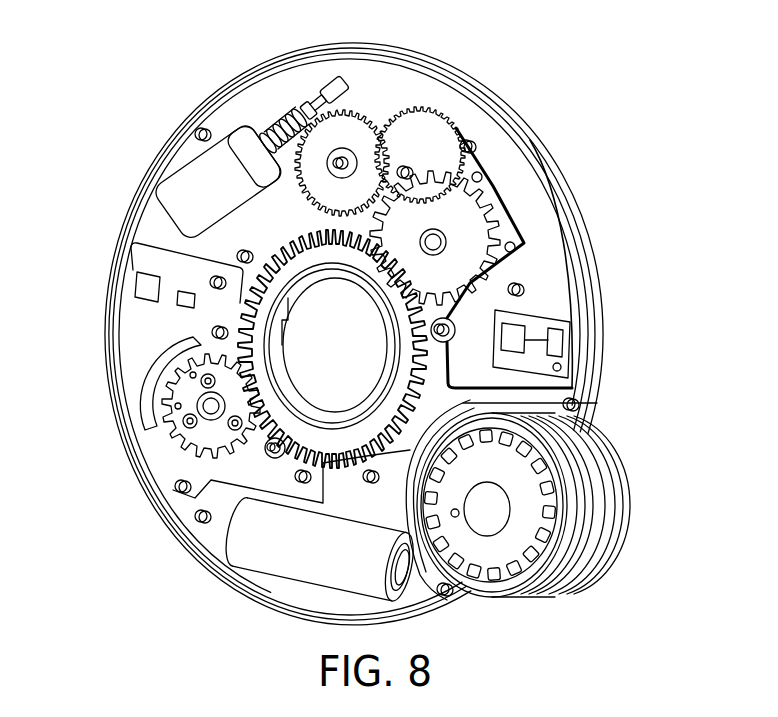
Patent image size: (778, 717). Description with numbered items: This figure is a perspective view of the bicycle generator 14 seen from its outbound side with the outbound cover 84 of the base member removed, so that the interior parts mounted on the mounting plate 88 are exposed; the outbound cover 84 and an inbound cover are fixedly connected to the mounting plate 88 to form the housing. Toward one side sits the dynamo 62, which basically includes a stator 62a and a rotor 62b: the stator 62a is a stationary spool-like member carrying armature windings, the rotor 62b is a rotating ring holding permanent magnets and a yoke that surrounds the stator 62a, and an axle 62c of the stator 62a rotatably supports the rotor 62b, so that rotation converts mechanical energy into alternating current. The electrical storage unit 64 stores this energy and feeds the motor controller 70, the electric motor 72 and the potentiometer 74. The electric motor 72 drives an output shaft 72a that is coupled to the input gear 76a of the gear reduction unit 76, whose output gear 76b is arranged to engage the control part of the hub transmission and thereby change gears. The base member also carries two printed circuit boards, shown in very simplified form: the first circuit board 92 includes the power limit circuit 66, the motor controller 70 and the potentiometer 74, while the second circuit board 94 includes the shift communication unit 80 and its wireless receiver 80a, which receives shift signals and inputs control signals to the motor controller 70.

The bicycle generator 14 is at (108, 117).
The dynamo 62 is at (558, 505).
The stator 62a is at (527, 500).
The rotor 62b is at (565, 475).
The axle 62c is at (493, 515).
The electrical storage unit 64 is at (278, 543).
The power limit circuit 66 is at (183, 308).
The motor controller 70 is at (137, 287).
The electric motor 72 is at (183, 158).
The output shaft 72a is at (297, 122).
The potentiometer 74 is at (150, 403).
The gear reduction unit 76 is at (440, 108).
The input gear 76a is at (363, 120).
The output gear 76b is at (307, 250).
The shift communication unit 80 is at (520, 322).
The wireless receiver 80a is at (563, 338).
The outbound cover 84 is at (520, 125).
The mounting plate 88 is at (548, 178).
The first circuit board 92 is at (152, 243).
The second circuit board 94 is at (567, 290).